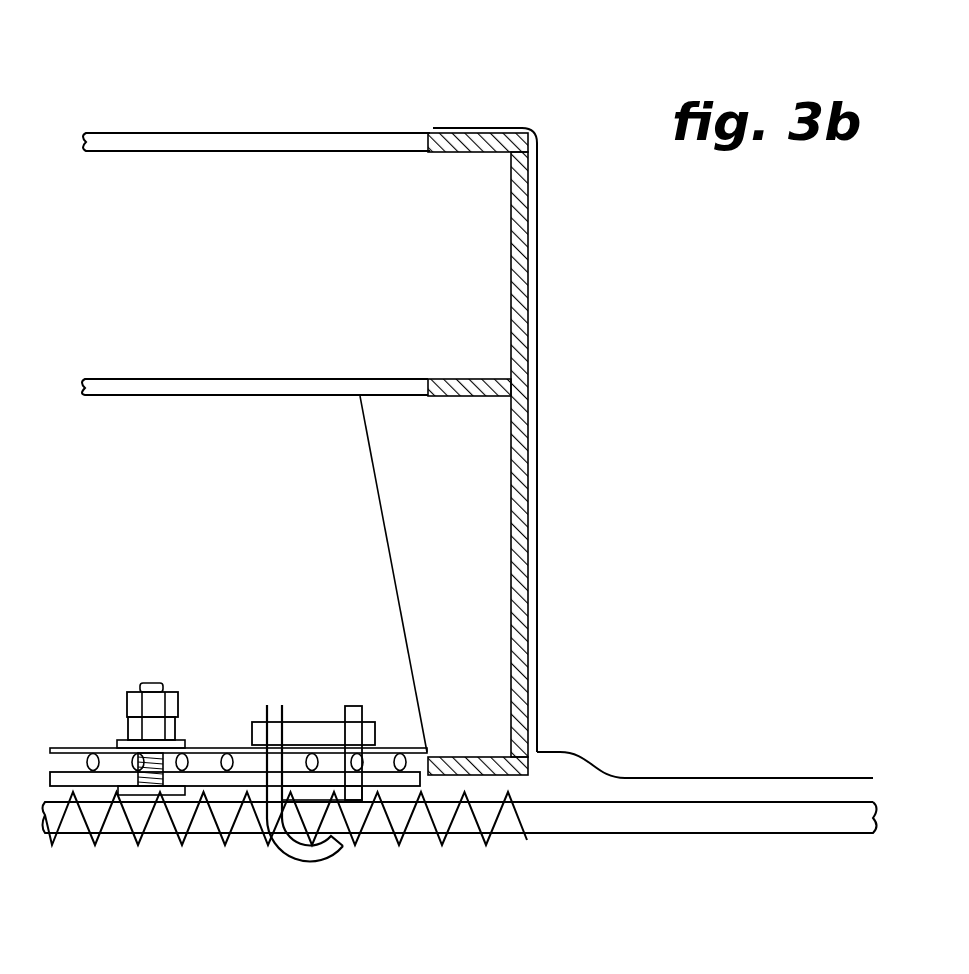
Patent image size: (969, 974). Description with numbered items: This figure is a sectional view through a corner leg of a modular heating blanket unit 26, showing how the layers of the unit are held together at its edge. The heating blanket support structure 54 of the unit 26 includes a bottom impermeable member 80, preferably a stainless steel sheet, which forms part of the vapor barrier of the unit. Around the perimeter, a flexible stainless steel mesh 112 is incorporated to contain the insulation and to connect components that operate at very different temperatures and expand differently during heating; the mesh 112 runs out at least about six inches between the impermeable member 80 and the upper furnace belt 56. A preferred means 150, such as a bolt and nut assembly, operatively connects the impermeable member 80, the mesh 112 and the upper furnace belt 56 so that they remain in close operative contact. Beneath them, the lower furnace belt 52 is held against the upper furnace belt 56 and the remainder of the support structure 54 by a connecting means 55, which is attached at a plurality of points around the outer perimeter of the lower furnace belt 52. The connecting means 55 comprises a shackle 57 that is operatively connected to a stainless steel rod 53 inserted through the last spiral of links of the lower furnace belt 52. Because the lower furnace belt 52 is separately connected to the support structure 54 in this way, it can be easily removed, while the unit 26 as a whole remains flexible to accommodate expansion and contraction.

The heating blanket unit 26 is at (255, 113).
The heating blanket support structure 54 is at (381, 113).
The stainless steel mesh 112 is at (655, 778).
The upper furnace belt 56 is at (90, 747).
The lower furnace belt 52 is at (396, 840).
The connecting means 150 is at (141, 665).
The connecting means 55 is at (328, 705).
The bottom impermeable member 80 is at (210, 747).
The shackle 57 is at (300, 856).
The stainless steel rod 53 is at (672, 820).